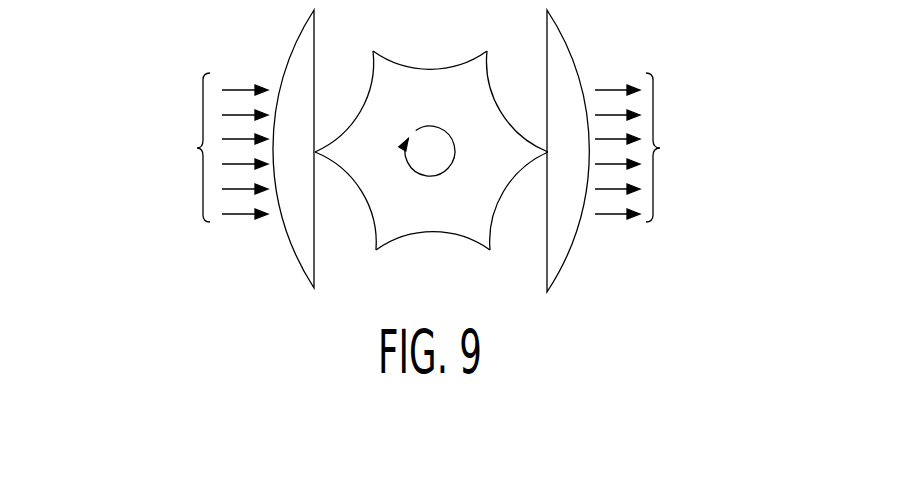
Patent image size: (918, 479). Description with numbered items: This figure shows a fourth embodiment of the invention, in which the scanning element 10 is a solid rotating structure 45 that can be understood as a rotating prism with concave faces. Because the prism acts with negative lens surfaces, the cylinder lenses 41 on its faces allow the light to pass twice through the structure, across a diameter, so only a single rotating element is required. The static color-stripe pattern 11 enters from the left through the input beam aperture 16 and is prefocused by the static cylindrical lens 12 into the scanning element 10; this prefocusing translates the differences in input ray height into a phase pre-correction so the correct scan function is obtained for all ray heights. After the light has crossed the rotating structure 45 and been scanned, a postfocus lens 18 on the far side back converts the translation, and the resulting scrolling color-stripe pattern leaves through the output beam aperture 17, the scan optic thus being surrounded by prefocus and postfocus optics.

The scanning element 10 is at (401, 77).
The static color-stripe pattern 11 is at (233, 85).
The static cylindrical lens 12 is at (290, 243).
The input beam aperture 16 is at (181, 185).
The output beam aperture 17 is at (686, 188).
The second lens 18 is at (566, 50).
The cylinder lenses 41 is at (363, 100).
The solid rotating structure 45 is at (457, 113).